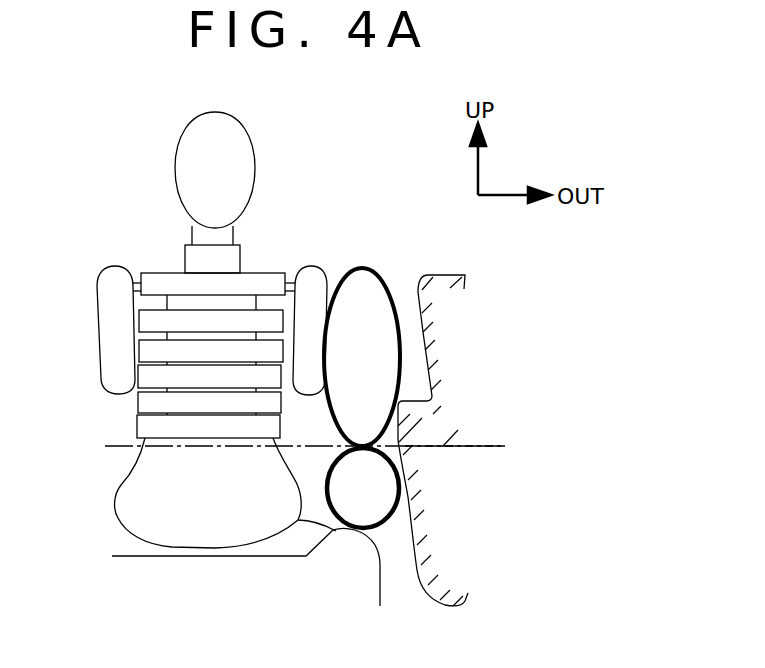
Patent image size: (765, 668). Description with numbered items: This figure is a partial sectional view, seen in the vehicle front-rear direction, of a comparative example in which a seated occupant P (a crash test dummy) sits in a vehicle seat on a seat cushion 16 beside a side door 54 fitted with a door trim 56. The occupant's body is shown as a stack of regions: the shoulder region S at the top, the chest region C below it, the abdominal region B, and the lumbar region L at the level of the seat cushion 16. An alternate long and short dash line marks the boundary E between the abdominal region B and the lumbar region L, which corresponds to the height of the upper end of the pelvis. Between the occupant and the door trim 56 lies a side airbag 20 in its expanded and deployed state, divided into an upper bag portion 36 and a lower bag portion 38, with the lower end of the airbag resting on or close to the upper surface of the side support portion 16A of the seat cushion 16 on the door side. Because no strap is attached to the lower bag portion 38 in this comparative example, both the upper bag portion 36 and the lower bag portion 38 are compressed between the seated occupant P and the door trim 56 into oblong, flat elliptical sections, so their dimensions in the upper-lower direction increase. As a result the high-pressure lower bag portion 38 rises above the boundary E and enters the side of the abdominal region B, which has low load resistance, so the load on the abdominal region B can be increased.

The seated occupant P is at (181, 127).
The shoulder region S is at (313, 270).
The chest region C is at (150, 352).
The abdominal region B is at (148, 426).
The lumbar region L is at (117, 490).
The seat cushion 16 is at (203, 548).
The side support portion 16A is at (300, 521).
The side airbag 20 is at (378, 256).
The upper bag portion 36 is at (400, 338).
The lower bag portion 38 is at (400, 488).
The door trim 56 is at (442, 273).
The side door 54 is at (433, 440).
The boundary E is at (446, 442).